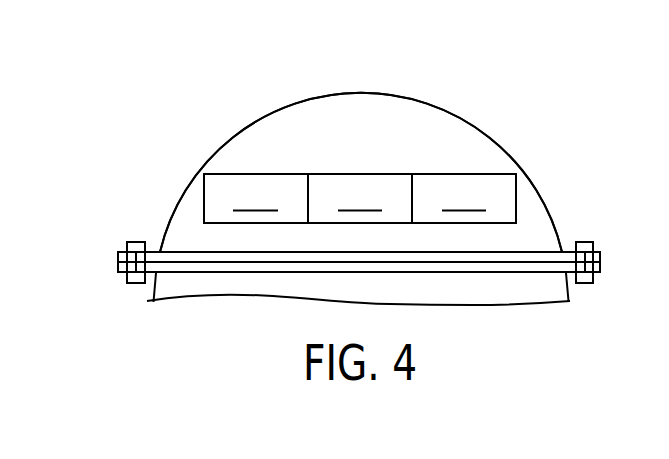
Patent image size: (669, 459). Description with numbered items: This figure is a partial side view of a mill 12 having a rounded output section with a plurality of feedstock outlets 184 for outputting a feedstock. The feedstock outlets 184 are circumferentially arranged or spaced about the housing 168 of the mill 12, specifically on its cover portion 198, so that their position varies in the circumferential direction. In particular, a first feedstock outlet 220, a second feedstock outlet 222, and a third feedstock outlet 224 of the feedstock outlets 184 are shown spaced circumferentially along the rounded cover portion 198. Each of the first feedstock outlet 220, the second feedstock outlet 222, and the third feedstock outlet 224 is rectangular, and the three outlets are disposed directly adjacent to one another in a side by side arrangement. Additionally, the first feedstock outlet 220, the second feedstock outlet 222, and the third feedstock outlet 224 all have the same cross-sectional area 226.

The mill 12 is at (170, 137).
The housing 168 is at (549, 212).
The cover portion 198 is at (472, 123).
The first feedstock outlet 220 is at (260, 174).
The second feedstock outlet 222 is at (358, 174).
The third feedstock outlet 224 is at (462, 174).
The cross-sectional area 226 is at (359, 197).
The feedstock outlets 184 is at (259, 224).